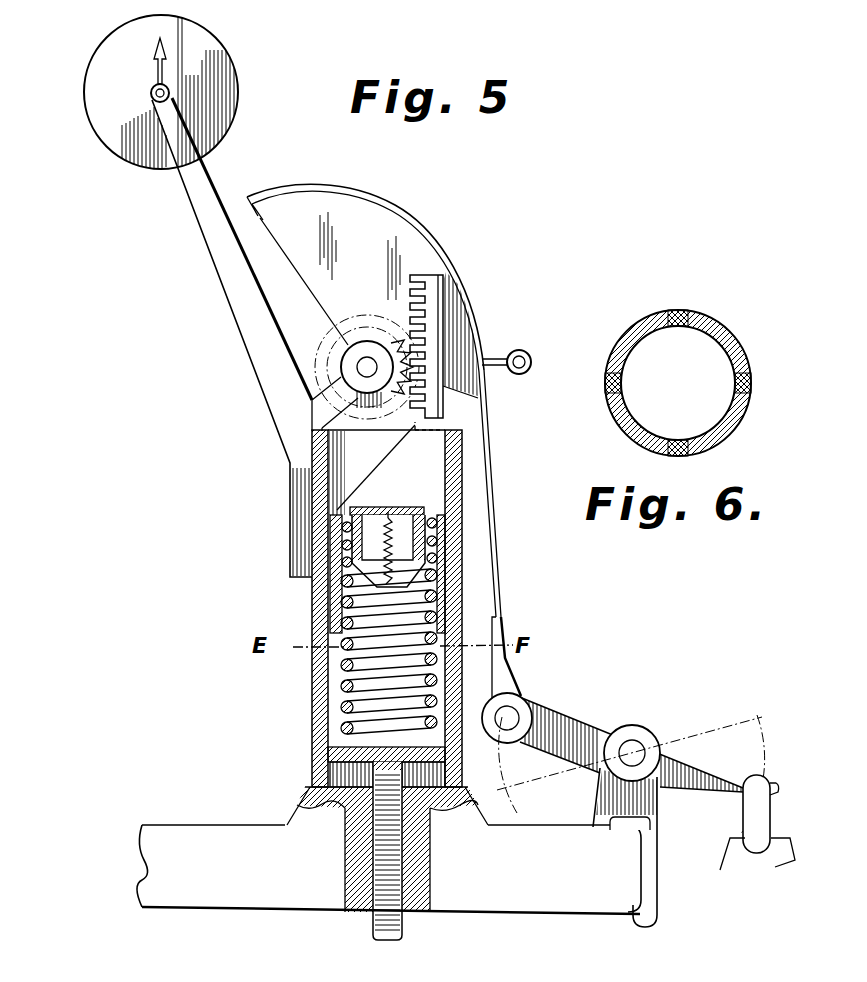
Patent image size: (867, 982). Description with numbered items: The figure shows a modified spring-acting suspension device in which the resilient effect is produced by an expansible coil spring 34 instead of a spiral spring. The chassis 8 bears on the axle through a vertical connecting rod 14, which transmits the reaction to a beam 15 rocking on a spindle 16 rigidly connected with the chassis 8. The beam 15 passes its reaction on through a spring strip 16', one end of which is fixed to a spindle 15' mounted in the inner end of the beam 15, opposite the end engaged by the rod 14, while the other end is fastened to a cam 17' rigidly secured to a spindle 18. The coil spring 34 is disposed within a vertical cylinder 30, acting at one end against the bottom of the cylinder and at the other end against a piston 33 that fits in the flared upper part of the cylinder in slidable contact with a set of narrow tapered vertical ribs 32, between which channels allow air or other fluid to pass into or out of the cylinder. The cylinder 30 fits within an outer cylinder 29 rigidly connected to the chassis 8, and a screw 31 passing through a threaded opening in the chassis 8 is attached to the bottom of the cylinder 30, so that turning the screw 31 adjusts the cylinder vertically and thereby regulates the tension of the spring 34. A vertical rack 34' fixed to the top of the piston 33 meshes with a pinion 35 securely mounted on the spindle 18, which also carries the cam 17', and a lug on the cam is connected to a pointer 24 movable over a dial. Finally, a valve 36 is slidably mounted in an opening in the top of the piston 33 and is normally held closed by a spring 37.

In FIG. 5, the pointer 24 is at (170, 90).
In FIG. 5, the spindle 18 is at (360, 362).
In FIG. 5, the cam 17' is at (365, 287).
In FIG. 5, the pinion 35 is at (352, 333).
In FIG. 5, the vertical rack 34' is at (470, 346).
In FIG. 5, the outer cylinder 29 is at (314, 607).
In FIG. 5, the vertical cylinder 30 is at (318, 748).
In FIG. 5, the tapered vertical ribs 32 is at (330, 539).
In FIG. 6, the tapered vertical ribs 32 is at (677, 327).
In FIG. 5, the valve 36 is at (368, 510).
In FIG. 5, the piston 33 is at (440, 540).
In FIG. 5, the spring 37 is at (388, 533).
In FIG. 5, the expansible coil spring 34 is at (348, 626).
In FIG. 5, the screw 31 is at (380, 836).
In FIG. 5, the chassis 8 is at (525, 903).
In FIG. 5, the spring strip 16' is at (510, 536).
In FIG. 5, the beam 15 is at (627, 738).
In FIG. 5, the spindle 15' is at (535, 710).
In FIG. 5, the spindle 16 is at (631, 815).
In FIG. 5, the vertical connecting rod 14 is at (758, 835).